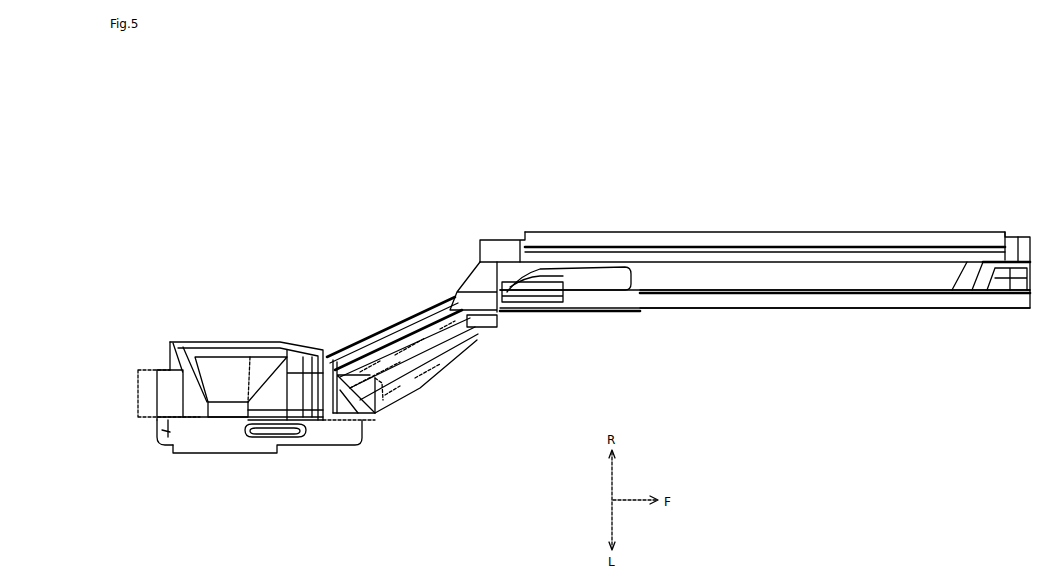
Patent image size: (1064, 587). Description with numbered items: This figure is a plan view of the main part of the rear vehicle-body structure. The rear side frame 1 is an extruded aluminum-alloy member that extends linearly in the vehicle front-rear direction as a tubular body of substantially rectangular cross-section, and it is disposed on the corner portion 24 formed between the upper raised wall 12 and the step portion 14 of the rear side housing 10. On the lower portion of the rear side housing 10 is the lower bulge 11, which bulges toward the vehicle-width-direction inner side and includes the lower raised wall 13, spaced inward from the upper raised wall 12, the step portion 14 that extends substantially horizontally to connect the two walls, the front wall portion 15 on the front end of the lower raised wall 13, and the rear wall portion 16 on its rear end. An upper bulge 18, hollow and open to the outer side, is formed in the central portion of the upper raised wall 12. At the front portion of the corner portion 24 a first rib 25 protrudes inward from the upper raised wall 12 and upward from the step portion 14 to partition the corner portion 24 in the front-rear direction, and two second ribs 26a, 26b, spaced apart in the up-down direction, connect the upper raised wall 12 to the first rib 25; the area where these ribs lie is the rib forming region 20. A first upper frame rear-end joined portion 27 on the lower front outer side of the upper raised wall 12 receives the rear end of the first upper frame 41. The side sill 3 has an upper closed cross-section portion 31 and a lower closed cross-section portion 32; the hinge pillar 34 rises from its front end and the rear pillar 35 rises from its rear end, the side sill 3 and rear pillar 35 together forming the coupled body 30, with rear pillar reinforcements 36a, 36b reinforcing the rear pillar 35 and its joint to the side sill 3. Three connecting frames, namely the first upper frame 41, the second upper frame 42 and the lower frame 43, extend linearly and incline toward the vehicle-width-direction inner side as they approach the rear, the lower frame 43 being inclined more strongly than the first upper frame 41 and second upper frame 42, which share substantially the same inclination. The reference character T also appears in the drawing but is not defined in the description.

The rear side frame 1 is at (198, 452).
The side sill 3 is at (886, 308).
The rear side housing 10 is at (199, 342).
The lower bulge 11 is at (208, 455).
The upper raised wall 12 is at (247, 347).
The lower raised wall 13 is at (233, 455).
The step portion 14 is at (320, 430).
The front wall portion 15 is at (387, 433).
The rear wall portion 16 is at (160, 432).
The upper bulge 18 is at (181, 347).
The rib forming region 20 is at (370, 437).
The corner portion 24 is at (169, 379).
The first rib 25 is at (350, 435).
The second rib 26a is at (363, 433).
The second rib 26b is at (387, 413).
The first upper frame rear-end joined portion 27 is at (340, 356).
The coupled body 30 is at (924, 308).
The upper closed cross-section portion 31 is at (848, 232).
The lower closed cross-section portion 32 is at (777, 308).
The hinge pillar 34 is at (1017, 262).
The rear pillar 35 is at (462, 286).
The rear pillar reinforcement 36a is at (510, 310).
The rear pillar reinforcement 36b is at (607, 293).
The first upper frame 41 is at (452, 364).
The second upper frame 42 is at (465, 342).
The lower frame 43 is at (418, 388).
The tilt axis T is at (395, 320).